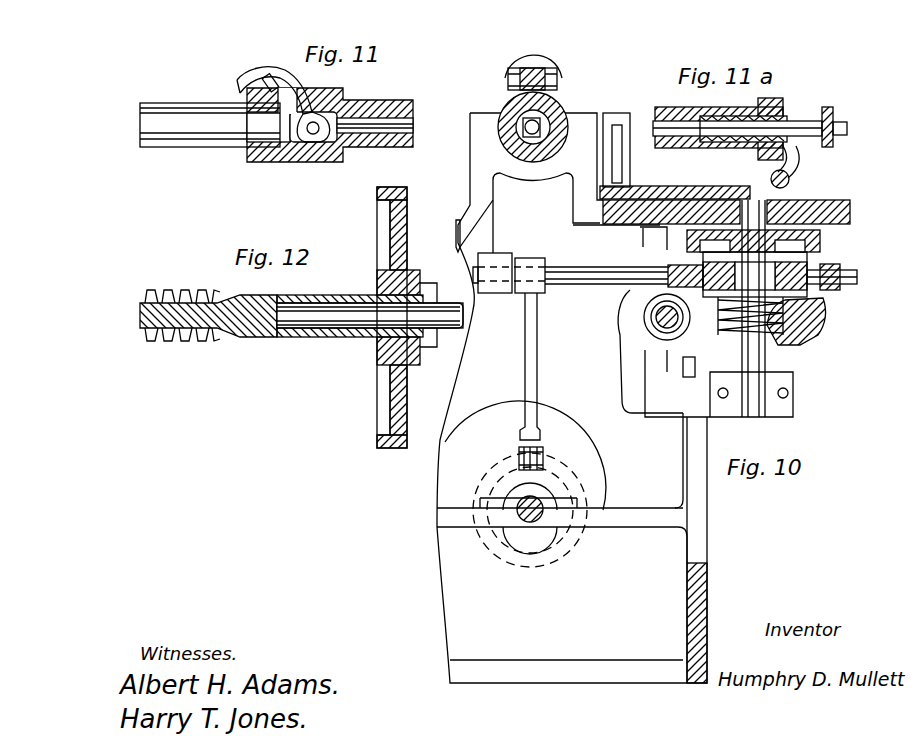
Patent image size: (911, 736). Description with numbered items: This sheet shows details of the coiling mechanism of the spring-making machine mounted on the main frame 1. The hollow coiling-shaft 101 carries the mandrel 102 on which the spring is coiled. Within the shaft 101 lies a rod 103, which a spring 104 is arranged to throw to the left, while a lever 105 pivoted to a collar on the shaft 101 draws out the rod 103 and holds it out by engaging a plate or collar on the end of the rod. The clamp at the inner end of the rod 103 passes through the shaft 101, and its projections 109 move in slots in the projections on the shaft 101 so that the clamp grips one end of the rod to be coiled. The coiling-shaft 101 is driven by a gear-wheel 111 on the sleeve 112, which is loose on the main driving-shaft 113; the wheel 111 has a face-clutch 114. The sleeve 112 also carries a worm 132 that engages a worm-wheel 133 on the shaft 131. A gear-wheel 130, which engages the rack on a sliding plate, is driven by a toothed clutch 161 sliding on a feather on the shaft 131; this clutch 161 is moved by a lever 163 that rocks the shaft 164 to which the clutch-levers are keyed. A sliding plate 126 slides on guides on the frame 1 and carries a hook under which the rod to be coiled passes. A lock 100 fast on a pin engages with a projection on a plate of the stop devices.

In FIG. 10, the main frame 1 is at (615, 375).
In FIG. 11, the lock 100 is at (270, 73).
In FIG. 11, the hollow coiling-shaft 101 is at (365, 103).
In FIG. 11A, the hollow coiling-shaft 101 is at (692, 110).
In FIG. 11, the mandrel 102 is at (210, 125).
In FIG. 11, the rod 103 is at (410, 120).
In FIG. 11A, the rod 103 is at (655, 122).
In FIG. 11A, the spring 104 is at (736, 148).
In FIG. 11A, the lever 105 is at (796, 150).
In FIG. 11, the projections 109 is at (283, 88).
In FIG. 10, the projections 109 is at (533, 63).
In FIG. 12, the gear-wheel 111 is at (400, 367).
In FIG. 12, the sleeve 112 is at (297, 337).
In FIG. 10, the sleeve 112 is at (656, 311).
In FIG. 12, the main driving-shaft 113 is at (360, 340).
In FIG. 12, the face-clutch 114 is at (426, 290).
In FIG. 10, the face-clutch 114 is at (453, 243).
In FIG. 10, the sliding plate 126 is at (668, 190).
In FIG. 10, the gear-wheel 130 is at (822, 243).
In FIG. 10, the shaft 131 is at (755, 358).
In FIG. 12, the worm 132 is at (160, 340).
In FIG. 10, the worm 132 is at (655, 326).
In FIG. 10, the worm-wheel 133 is at (806, 324).
In FIG. 10, the toothed clutch 161 is at (822, 290).
In FIG. 10, the lever 163 is at (538, 333).
In FIG. 10, the shaft 164 is at (575, 272).